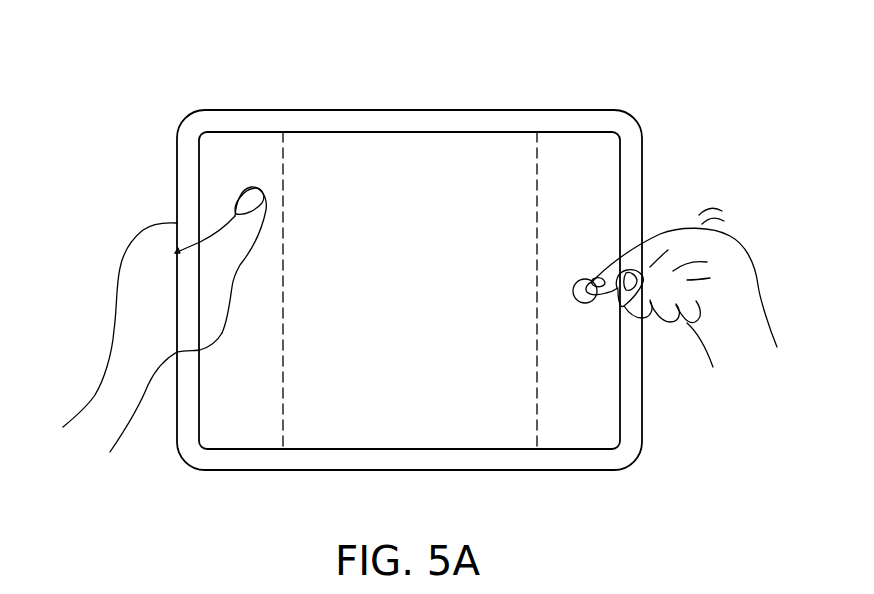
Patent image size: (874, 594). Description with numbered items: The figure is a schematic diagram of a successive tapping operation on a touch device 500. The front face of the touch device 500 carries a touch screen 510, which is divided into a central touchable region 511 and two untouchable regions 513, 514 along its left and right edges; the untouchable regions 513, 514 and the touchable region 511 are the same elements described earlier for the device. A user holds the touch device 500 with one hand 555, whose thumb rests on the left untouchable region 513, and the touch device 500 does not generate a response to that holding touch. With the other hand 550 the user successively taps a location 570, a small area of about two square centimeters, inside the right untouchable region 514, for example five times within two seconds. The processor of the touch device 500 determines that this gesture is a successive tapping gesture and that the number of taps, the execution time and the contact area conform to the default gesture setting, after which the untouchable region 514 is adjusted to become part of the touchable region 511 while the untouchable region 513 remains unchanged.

The touch device 500 is at (236, 109).
The touch display 510 is at (488, 132).
The touchable region 511 is at (405, 160).
The untouchable region 513 is at (258, 145).
The untouchable region 514 is at (600, 168).
The hand 550 is at (752, 305).
The hand 555 is at (118, 373).
The location 570 is at (585, 278).